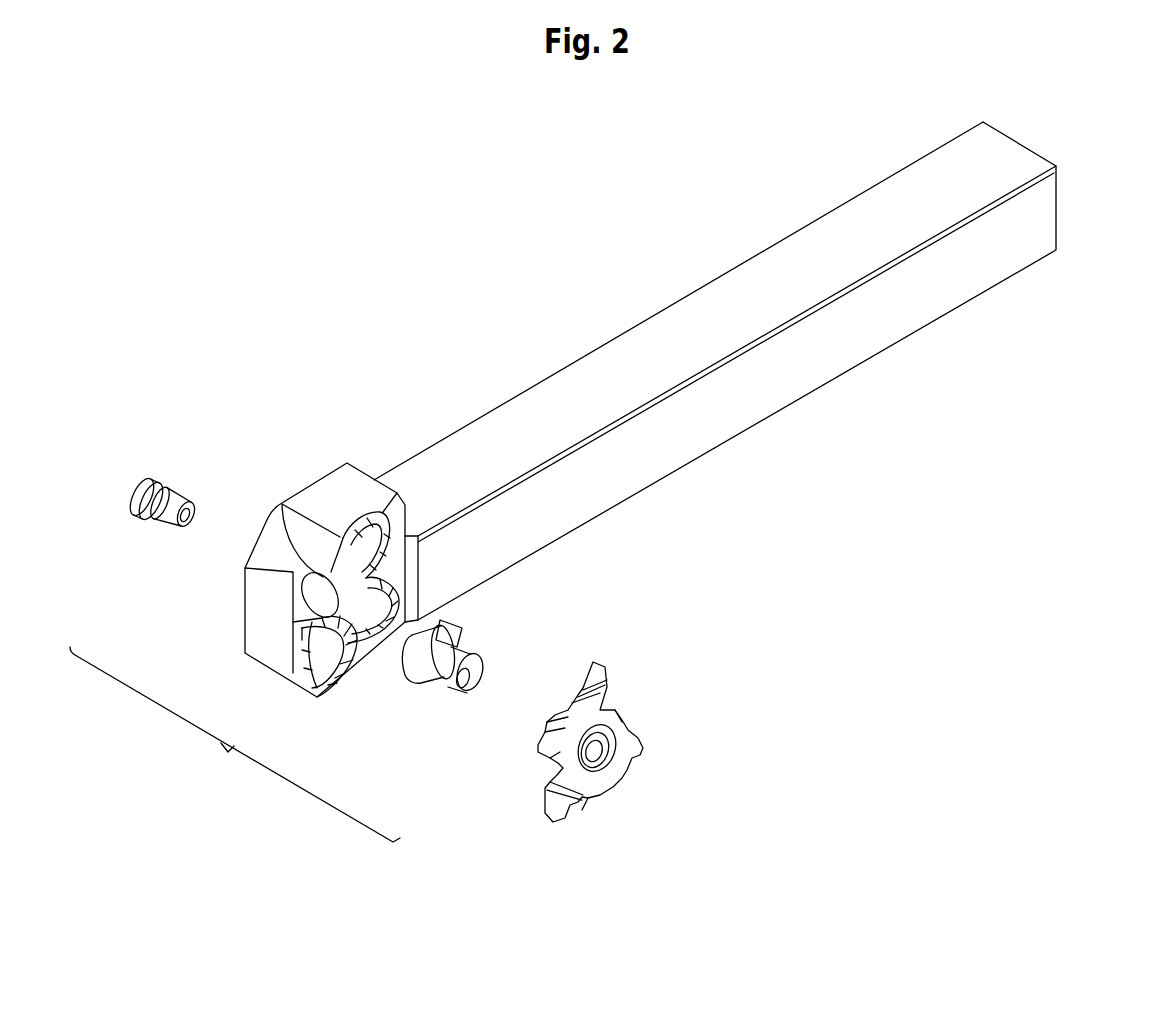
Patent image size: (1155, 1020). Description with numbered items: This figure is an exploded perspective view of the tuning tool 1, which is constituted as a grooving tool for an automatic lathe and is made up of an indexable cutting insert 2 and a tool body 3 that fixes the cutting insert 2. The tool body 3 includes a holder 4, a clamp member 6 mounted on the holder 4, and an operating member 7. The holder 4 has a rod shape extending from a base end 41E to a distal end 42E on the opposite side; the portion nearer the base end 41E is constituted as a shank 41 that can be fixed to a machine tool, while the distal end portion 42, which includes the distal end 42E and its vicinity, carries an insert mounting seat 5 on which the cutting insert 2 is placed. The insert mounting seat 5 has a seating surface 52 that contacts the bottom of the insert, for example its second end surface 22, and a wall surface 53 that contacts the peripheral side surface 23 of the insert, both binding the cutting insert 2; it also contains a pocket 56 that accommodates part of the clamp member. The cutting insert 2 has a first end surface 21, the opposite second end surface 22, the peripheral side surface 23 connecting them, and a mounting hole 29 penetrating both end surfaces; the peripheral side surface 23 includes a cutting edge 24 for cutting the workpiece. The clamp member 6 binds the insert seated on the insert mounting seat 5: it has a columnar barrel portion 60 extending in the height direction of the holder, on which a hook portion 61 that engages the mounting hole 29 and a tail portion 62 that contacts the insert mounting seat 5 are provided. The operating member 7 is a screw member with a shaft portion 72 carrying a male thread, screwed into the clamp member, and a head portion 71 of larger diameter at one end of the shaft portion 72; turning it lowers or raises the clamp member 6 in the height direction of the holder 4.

The tuning tool 1 is at (697, 919).
The cutting insert 2 is at (587, 746).
The tool body 3 is at (235, 744).
The holder 4 is at (740, 340).
The shank 41 is at (972, 148).
The base end 41E is at (1020, 135).
The distal end portion 42 is at (327, 574).
The distal end 42E is at (262, 612).
The insert mounting seat 5 is at (332, 632).
The seating surface 52 is at (312, 640).
The wall surface 53 is at (322, 672).
The pocket 56 is at (322, 596).
The clamp member 6 is at (434, 683).
The barrel portion 60 is at (432, 676).
The hook portion 61 is at (458, 692).
The tail portion 62 is at (448, 632).
The operating member 7 is at (170, 510).
The head portion 71 is at (158, 480).
The shaft portion 72 is at (177, 492).
The first end surface 21 is at (590, 782).
The second end surface 22 is at (542, 728).
The peripheral side surface 23 is at (575, 700).
The cutting edge 24 is at (596, 664).
The mounting hole 29 is at (610, 727).